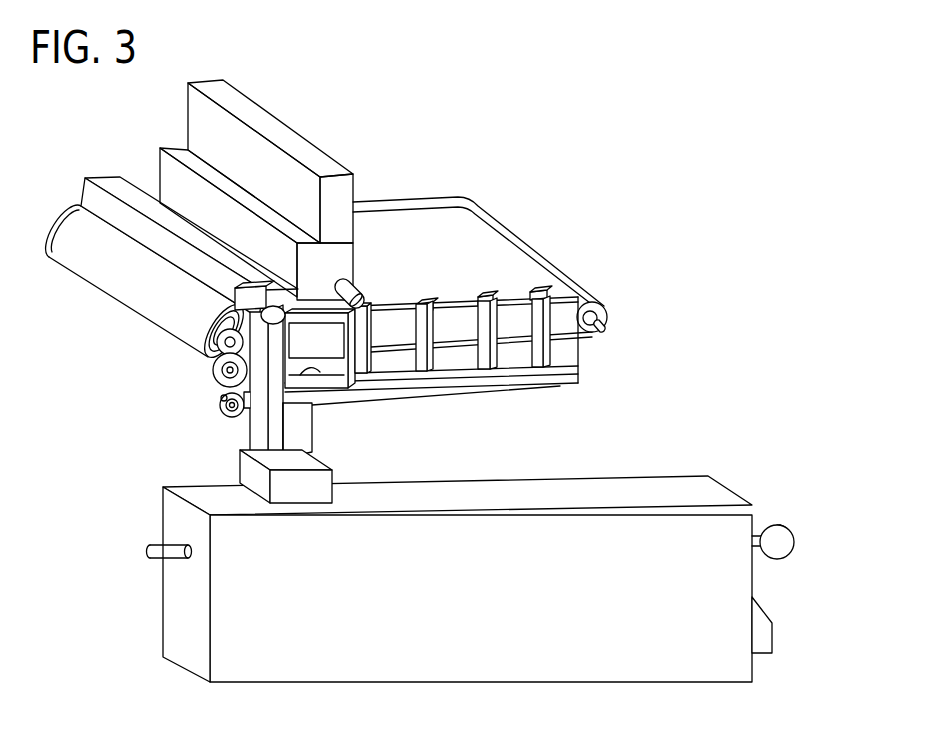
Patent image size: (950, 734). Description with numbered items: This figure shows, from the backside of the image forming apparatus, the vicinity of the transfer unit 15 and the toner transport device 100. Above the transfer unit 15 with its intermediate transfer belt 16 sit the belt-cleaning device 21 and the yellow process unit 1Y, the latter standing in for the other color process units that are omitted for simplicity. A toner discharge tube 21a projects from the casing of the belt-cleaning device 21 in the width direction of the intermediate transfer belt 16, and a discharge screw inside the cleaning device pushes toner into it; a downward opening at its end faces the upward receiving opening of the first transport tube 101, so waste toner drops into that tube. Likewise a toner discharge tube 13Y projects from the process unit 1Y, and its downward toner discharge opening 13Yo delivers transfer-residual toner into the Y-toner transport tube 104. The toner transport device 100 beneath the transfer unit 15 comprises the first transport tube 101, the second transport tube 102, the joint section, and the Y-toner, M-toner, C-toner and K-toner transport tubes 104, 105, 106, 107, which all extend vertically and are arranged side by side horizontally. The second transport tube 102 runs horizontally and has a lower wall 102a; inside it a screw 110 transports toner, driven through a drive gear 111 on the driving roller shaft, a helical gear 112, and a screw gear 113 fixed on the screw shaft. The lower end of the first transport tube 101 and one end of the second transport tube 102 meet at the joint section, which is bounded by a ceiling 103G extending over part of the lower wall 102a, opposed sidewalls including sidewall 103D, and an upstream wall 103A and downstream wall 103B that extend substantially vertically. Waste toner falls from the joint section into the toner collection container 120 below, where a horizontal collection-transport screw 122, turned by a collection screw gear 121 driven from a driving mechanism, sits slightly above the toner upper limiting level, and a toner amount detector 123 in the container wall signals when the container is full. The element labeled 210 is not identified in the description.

The toner transport device 100 is at (713, 200).
The process unit 1Y is at (327, 140).
The belt-cleaning device 21 is at (102, 177).
The toner discharge tube 21a is at (243, 297).
The toner discharge tube 13Y is at (355, 286).
The toner discharge opening 13Yo is at (370, 310).
The transfer unit 15 is at (614, 313).
The intermediate transfer belt 16 is at (563, 340).
The first transport tube 101 is at (288, 339).
The second transport tube 102 is at (520, 401).
The lower wall 102a is at (462, 397).
The upstream wall 103A is at (258, 480).
The downstream wall 103B is at (312, 427).
The sidewall 103D is at (292, 443).
The ceiling 103G is at (318, 372).
The Y-toner transport tube 104 is at (372, 333).
The M-toner transport tube 105 is at (440, 330).
The C-toner transport tube 106 is at (507, 317).
The K-toner transport tube 107 is at (560, 273).
The screw 110 is at (260, 402).
The drive gear 111 is at (217, 328).
The helical gear 112 is at (212, 363).
The screw gear 113 is at (223, 418).
The drum shaft opening 210 is at (222, 398).
The toner collection container 120 is at (720, 482).
The collection screw gear 121 is at (797, 533).
The collection-transport screw 122 is at (757, 556).
The toner amount detector 123 is at (773, 637).